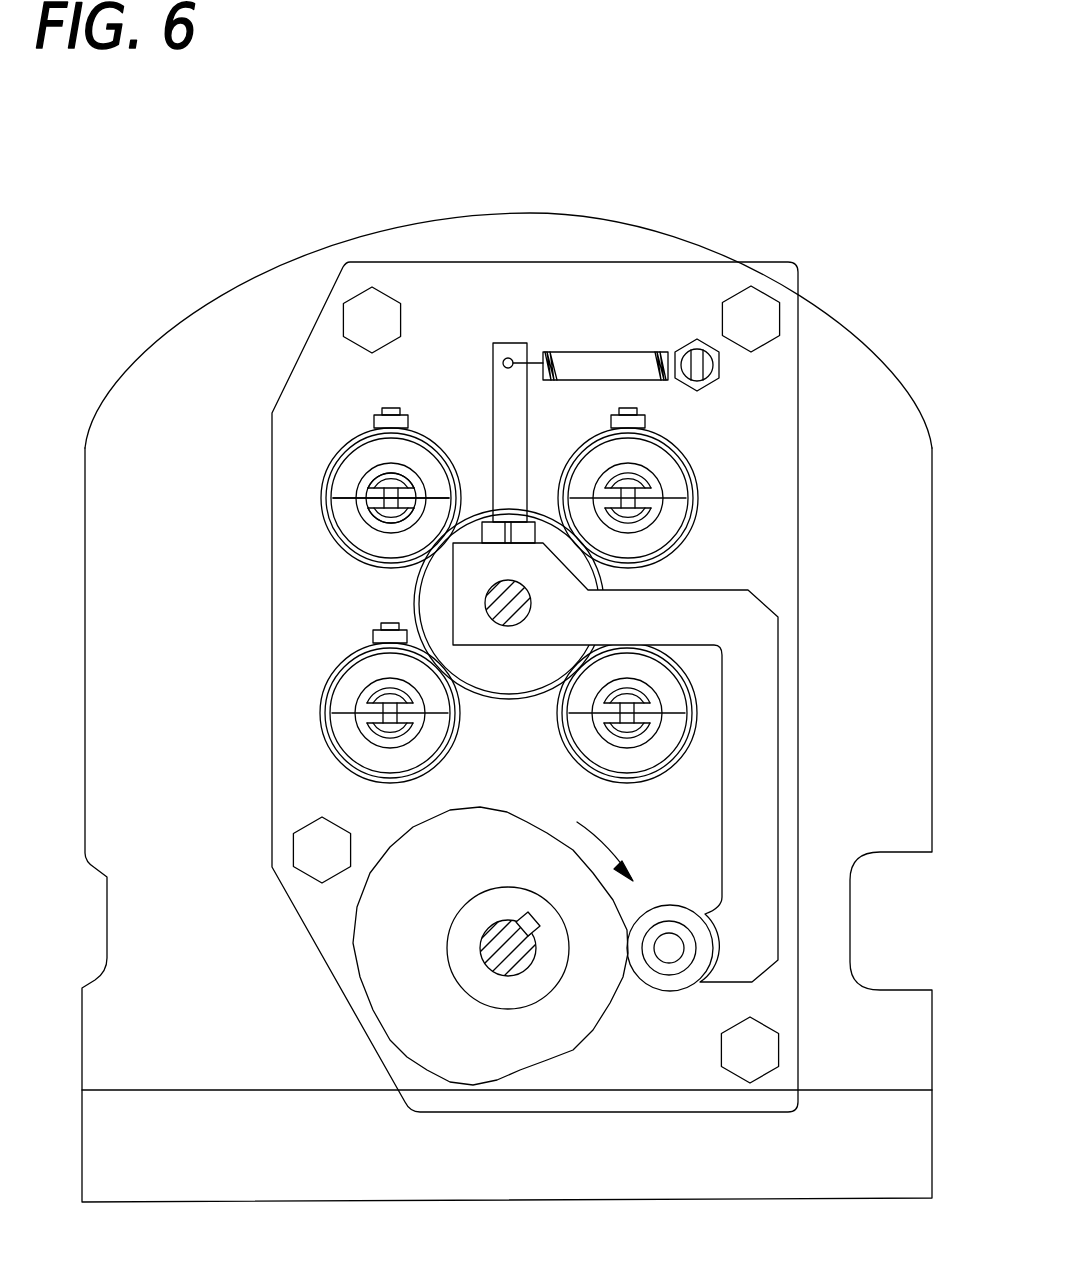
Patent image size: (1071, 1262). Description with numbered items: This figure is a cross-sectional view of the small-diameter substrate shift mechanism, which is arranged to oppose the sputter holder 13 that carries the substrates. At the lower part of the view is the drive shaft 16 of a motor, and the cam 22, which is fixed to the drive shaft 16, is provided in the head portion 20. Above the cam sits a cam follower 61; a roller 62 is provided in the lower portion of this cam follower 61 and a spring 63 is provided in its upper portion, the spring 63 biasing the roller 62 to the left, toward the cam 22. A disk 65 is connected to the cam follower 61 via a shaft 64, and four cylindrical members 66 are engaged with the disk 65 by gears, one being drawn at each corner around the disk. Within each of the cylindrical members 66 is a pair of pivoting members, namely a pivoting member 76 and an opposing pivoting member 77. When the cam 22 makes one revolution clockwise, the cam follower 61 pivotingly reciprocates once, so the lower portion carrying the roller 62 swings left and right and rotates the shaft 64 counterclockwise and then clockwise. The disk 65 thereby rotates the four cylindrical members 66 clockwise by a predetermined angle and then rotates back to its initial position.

The sputter holder 13 is at (310, 248).
The drive shaft 16 is at (490, 963).
The head portion 20 is at (470, 1122).
The cam 22 is at (362, 938).
The cam follower 61 is at (763, 632).
The roller 62 is at (650, 990).
The spring 63 is at (552, 360).
The shaft 64 is at (485, 607).
The disk 65 is at (508, 702).
The cylindrical member 66 is at (333, 455).
The pivoting member 76 is at (397, 462).
The pivoting member 77 is at (382, 527).